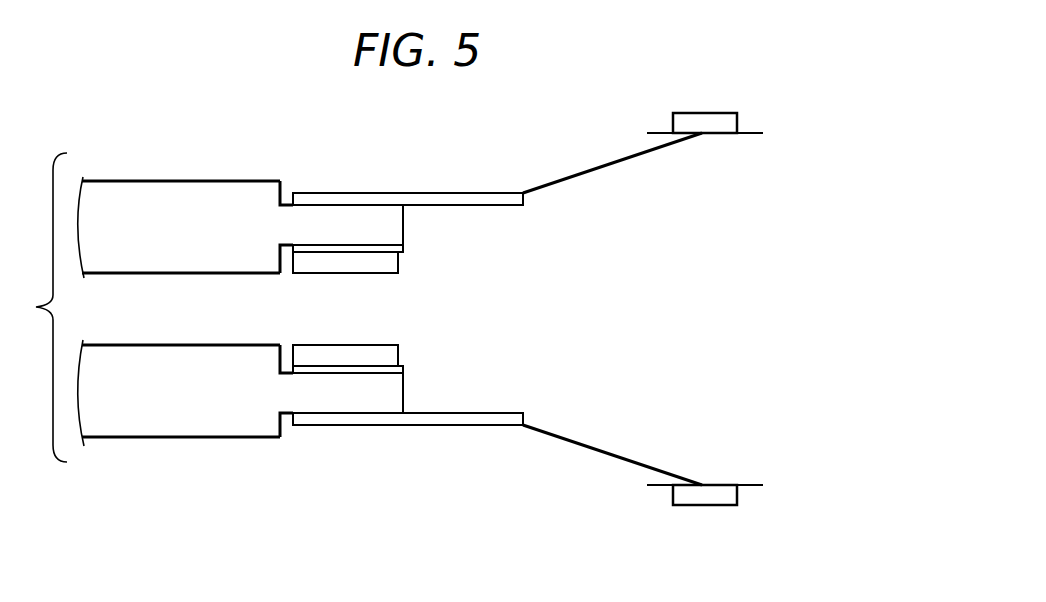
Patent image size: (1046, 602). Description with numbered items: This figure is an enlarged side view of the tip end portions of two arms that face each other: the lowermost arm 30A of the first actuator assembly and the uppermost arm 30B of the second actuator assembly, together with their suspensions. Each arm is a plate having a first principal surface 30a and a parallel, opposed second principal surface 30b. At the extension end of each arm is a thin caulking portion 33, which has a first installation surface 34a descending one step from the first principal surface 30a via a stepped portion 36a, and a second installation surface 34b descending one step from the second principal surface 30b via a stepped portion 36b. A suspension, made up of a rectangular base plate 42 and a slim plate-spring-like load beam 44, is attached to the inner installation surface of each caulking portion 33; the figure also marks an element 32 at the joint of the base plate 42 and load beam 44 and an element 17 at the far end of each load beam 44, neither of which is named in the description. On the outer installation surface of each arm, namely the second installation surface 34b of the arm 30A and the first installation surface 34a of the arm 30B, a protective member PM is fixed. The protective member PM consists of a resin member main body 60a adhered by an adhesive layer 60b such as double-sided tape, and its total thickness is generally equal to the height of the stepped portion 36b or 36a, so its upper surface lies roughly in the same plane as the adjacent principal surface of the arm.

The stator core / yoke 17 is at (722, 123).
The lowermost arm 30A is at (179, 227).
The uppermost arm 30B is at (179, 389).
The first principal surface 30a is at (103, 180).
The second principal surface 30b is at (96, 275).
The magnet holder 32 is at (497, 168).
The caulking portion 33 is at (392, 225).
The first installation surface 34a is at (352, 198).
The second installation surface 34b is at (310, 428).
The stepped portion 36a is at (278, 192).
The stepped portion 36b is at (278, 262).
The base plate 42 is at (472, 198).
The load beam 44 is at (596, 170).
The member main body 60a is at (375, 263).
The adhesive layer 60b is at (387, 249).
The protective member PM is at (407, 270).